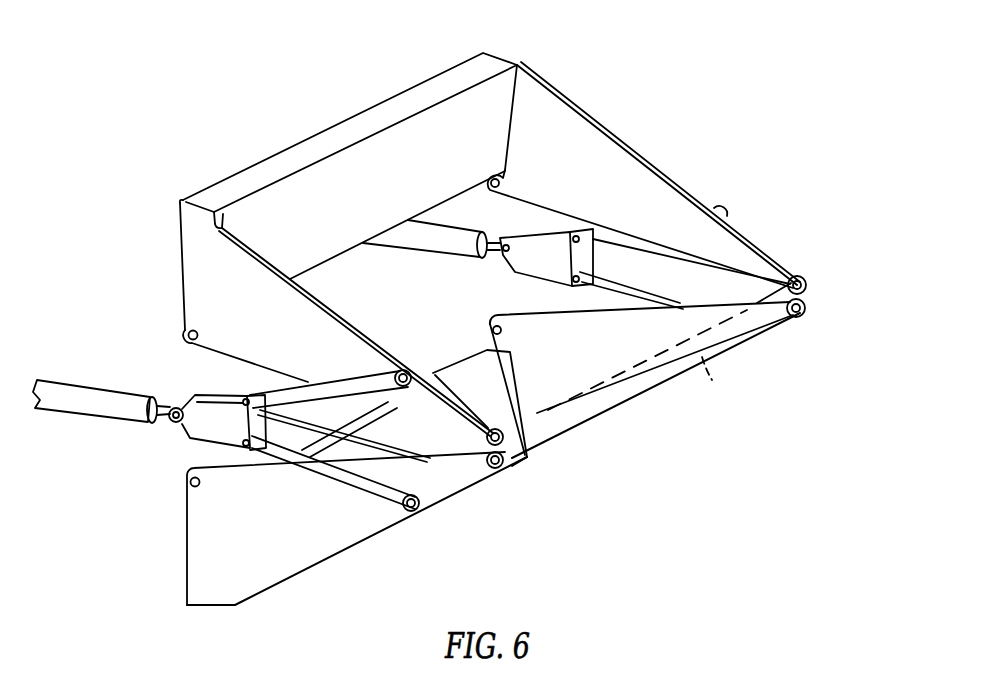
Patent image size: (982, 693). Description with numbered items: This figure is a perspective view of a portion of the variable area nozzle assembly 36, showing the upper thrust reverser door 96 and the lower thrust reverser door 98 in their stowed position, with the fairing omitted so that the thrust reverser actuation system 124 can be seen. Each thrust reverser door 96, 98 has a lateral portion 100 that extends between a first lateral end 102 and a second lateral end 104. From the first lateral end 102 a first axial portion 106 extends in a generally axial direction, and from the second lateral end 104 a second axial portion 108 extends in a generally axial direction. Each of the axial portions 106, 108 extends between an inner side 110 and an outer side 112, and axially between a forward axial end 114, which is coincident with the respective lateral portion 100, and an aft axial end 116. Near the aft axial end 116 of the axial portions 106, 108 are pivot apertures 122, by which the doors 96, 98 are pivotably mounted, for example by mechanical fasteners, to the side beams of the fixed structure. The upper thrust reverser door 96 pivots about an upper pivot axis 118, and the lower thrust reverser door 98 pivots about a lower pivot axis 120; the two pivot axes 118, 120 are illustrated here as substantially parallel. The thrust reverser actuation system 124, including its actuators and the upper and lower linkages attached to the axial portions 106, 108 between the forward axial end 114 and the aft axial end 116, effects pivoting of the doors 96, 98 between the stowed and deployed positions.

The variable area nozzle assembly 36 is at (767, 150).
The upper thrust reverser door 96 is at (597, 98).
The lower thrust reverser door 98 is at (313, 580).
The lateral portion 100 is at (360, 168).
The first lateral end 102 is at (162, 222).
The second lateral end 104 is at (514, 50).
The first axial portion 106 is at (197, 277).
The second axial portion 108 is at (648, 195).
The inner side 110 is at (209, 368).
The outer side 112 is at (633, 135).
The forward axial end 114 is at (158, 578).
The aft axial end 116 is at (536, 467).
The upper pivot axis 118 is at (677, 345).
The lower pivot axis 120 is at (712, 380).
The pivot apertures 122 is at (818, 302).
The thrust reverser actuation system 124 is at (110, 428).